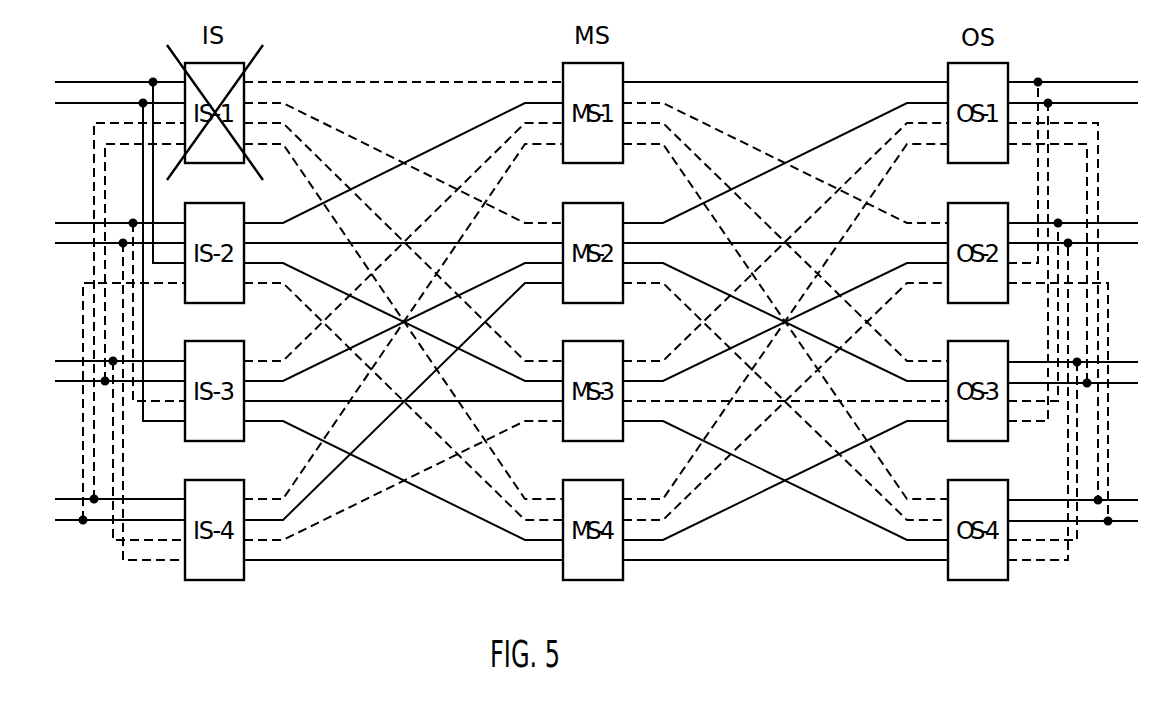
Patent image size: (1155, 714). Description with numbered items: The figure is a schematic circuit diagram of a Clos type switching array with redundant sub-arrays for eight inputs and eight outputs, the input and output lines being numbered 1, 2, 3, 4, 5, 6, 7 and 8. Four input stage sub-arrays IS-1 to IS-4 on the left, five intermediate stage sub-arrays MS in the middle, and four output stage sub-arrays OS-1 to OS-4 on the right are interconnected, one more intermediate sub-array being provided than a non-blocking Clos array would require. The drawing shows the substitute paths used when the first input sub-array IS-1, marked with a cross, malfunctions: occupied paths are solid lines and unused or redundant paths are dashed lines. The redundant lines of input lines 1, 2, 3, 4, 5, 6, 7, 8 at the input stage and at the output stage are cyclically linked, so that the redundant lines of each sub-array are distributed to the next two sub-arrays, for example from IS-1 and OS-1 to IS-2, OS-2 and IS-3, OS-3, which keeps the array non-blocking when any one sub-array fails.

The input/output line 1 is at (595, 292).
The input/output line 2 is at (595, 315).
The input/output line 3 is at (595, 235).
The input/output line 4 is at (595, 325).
The input/output line 5 is at (595, 395).
The input/output line 6 is at (595, 271).
The input/output line 7 is at (595, 318).
The input/output line 8 is at (595, 409).